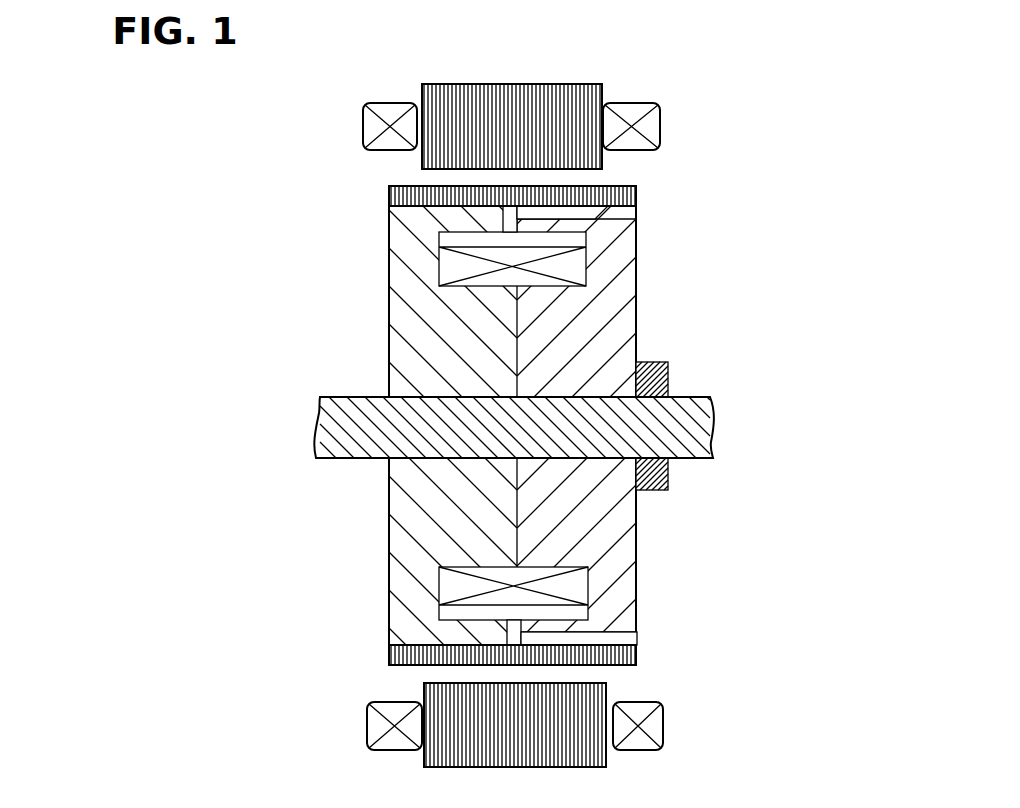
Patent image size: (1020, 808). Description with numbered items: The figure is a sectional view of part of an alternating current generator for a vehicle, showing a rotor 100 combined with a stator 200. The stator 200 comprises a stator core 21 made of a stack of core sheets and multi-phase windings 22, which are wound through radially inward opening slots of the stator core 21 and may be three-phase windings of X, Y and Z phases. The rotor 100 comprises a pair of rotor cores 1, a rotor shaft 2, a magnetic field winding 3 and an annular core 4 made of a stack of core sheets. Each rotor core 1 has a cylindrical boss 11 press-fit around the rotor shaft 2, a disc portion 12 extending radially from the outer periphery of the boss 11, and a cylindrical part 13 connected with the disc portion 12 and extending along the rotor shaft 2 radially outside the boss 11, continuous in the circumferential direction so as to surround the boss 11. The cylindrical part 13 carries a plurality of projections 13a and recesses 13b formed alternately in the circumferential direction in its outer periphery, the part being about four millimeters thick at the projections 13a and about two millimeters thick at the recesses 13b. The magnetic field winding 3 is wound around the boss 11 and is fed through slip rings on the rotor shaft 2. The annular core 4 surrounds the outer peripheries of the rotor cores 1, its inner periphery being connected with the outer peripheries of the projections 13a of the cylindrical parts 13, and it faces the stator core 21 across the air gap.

The rotor core 1 is at (379, 200).
The rotor shaft 2 is at (327, 402).
The magnetic field winding 3 is at (437, 276).
The annular core 4 is at (616, 188).
The cylindrical boss 11 is at (400, 314).
The disc portion 12 is at (395, 249).
The cylindrical part 13 is at (504, 399).
The projection 13a is at (438, 232).
The recess 13b is at (601, 213).
The stator core 21 is at (492, 90).
The multi-phase windings 22 is at (652, 126).
The rotor 100 is at (510, 409).
The stator 200 is at (552, 384).